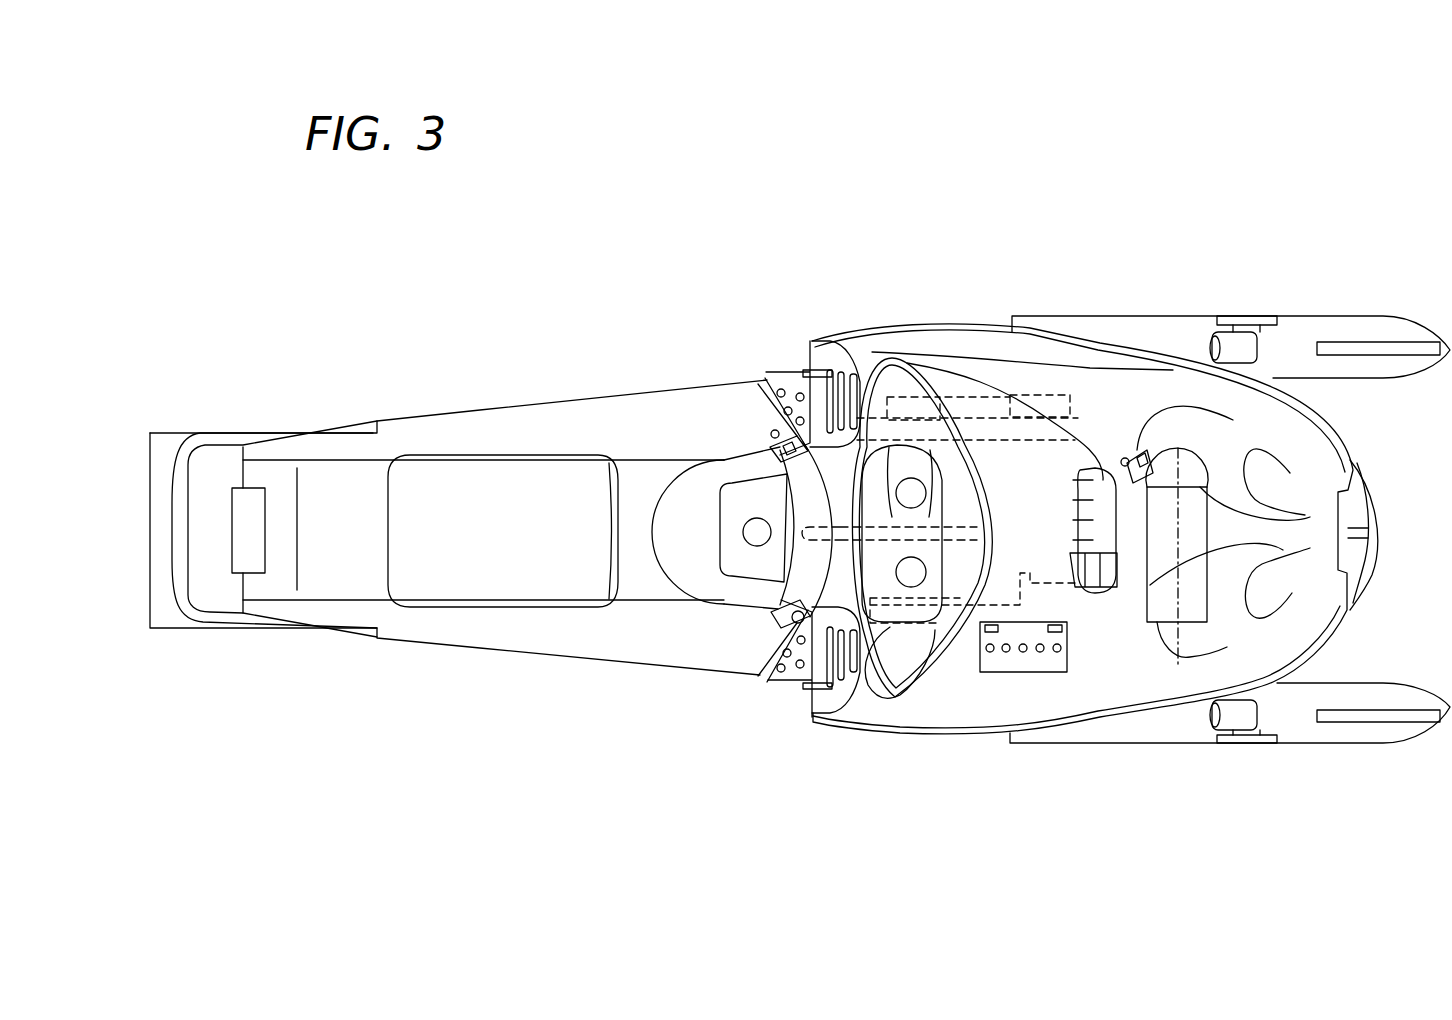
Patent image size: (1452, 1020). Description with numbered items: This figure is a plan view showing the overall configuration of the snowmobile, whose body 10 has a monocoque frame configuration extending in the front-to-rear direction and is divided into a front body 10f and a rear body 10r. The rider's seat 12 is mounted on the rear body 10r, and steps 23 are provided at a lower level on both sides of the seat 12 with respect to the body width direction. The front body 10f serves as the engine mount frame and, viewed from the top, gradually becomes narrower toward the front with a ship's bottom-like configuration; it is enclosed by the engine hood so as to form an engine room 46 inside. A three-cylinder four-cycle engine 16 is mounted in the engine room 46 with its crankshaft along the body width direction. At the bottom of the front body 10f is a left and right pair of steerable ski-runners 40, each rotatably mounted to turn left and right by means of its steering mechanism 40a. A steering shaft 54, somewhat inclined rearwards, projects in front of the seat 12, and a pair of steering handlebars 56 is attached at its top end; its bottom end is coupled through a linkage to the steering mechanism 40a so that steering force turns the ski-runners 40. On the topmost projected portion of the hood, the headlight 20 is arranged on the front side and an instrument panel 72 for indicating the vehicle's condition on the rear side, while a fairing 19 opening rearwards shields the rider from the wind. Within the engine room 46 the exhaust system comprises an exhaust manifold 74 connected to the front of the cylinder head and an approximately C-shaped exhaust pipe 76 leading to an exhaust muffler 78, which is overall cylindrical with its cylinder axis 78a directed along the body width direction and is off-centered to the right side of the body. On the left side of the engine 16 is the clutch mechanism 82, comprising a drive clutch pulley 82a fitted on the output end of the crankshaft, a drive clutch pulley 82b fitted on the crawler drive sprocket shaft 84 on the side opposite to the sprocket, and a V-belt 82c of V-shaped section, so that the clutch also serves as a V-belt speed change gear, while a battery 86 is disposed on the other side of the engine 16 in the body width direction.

The body 10 is at (703, 334).
The rear body 10r is at (494, 372).
The front body 10f is at (1133, 393).
The rider's seat 12 is at (522, 620).
The four-cycle engine 16 is at (1050, 467).
The fairing 19 is at (855, 375).
The headlight 20 is at (1068, 590).
The steps 23 is at (458, 425).
The steerable ski-runners 40 is at (1292, 335).
The steering mechanism 40a is at (1194, 333).
The engine room 46 is at (1283, 437).
The steering shaft 54 is at (800, 668).
The steering handlebars 56 is at (775, 567).
The instrument panel 72 is at (880, 675).
The exhaust manifold 74 is at (1110, 480).
The exhaust pipe 76 is at (1140, 457).
The exhaust muffler 78 is at (1157, 572).
The cylinder axis 78a is at (1172, 630).
The clutch mechanism 82 is at (858, 238).
The drive clutch pulley 82a is at (1020, 395).
The drive clutch pulley 82b is at (905, 397).
The V-belt 82c is at (945, 410).
The crawler drive sprocket shaft 84 is at (900, 630).
The battery 86 is at (1020, 665).